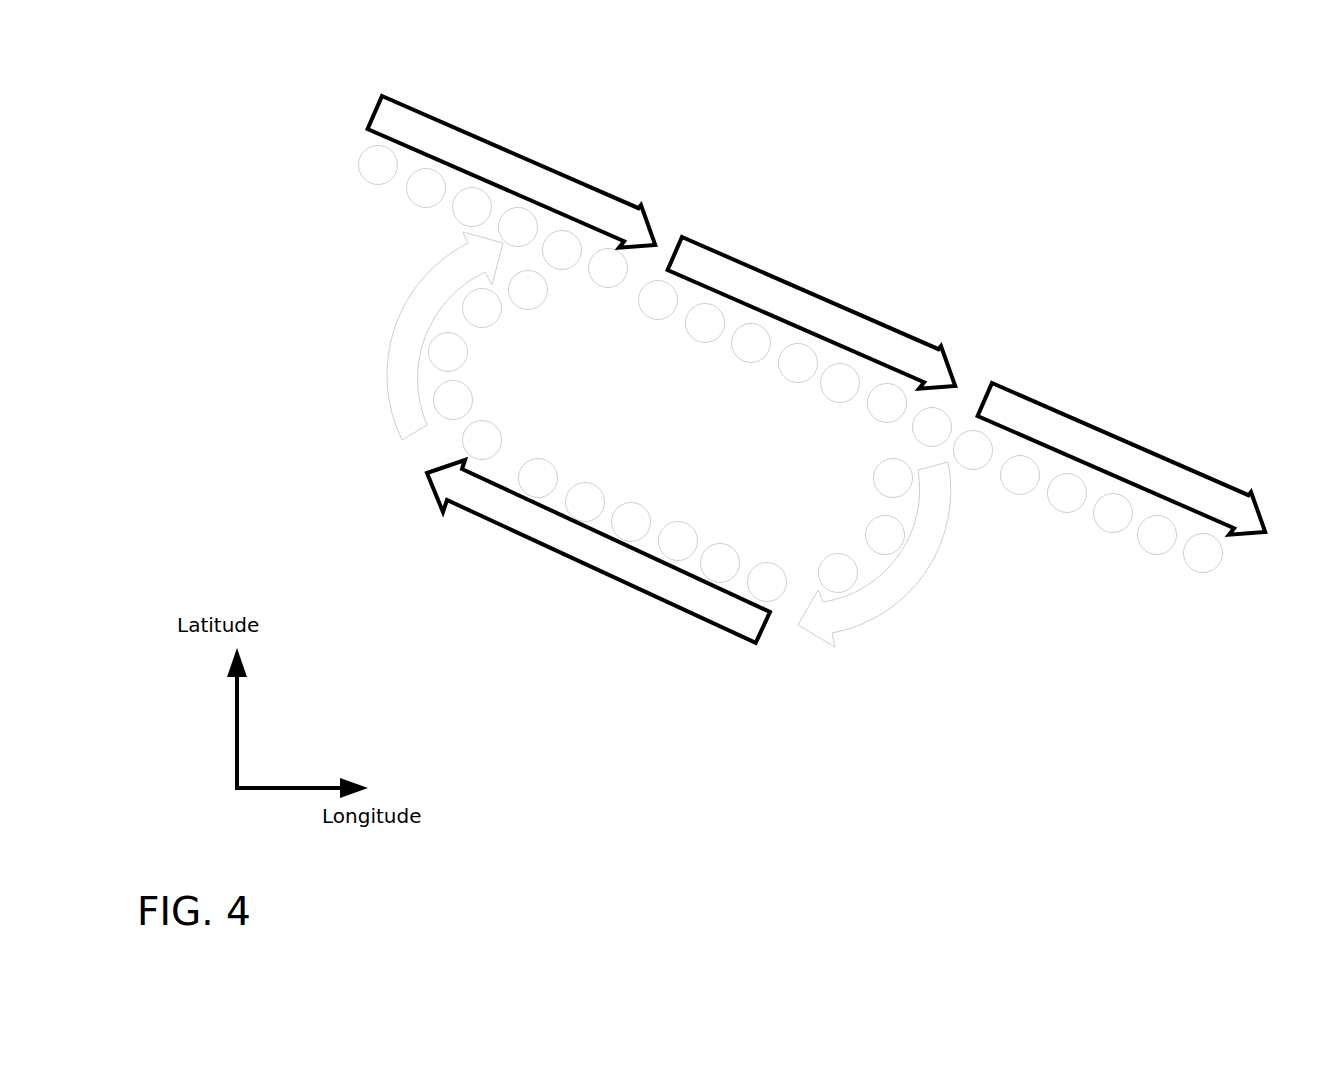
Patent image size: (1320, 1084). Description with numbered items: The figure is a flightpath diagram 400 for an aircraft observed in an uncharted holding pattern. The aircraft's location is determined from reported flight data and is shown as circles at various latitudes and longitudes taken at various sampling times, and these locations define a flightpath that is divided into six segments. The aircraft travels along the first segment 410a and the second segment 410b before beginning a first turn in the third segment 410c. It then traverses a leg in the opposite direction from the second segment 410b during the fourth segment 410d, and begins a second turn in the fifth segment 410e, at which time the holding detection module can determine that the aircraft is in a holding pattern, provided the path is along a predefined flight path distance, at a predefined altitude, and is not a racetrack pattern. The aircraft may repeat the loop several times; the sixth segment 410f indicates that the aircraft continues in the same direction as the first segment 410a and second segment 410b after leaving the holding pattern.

The flightpath diagram 400 is at (1115, 147).
The first segment 410a is at (455, 130).
The second segment 410b is at (818, 300).
The third segment 410c is at (897, 603).
The fourth segment 410d is at (595, 570).
The fifth segment 410e is at (383, 380).
The sixth segment 410f is at (1120, 443).